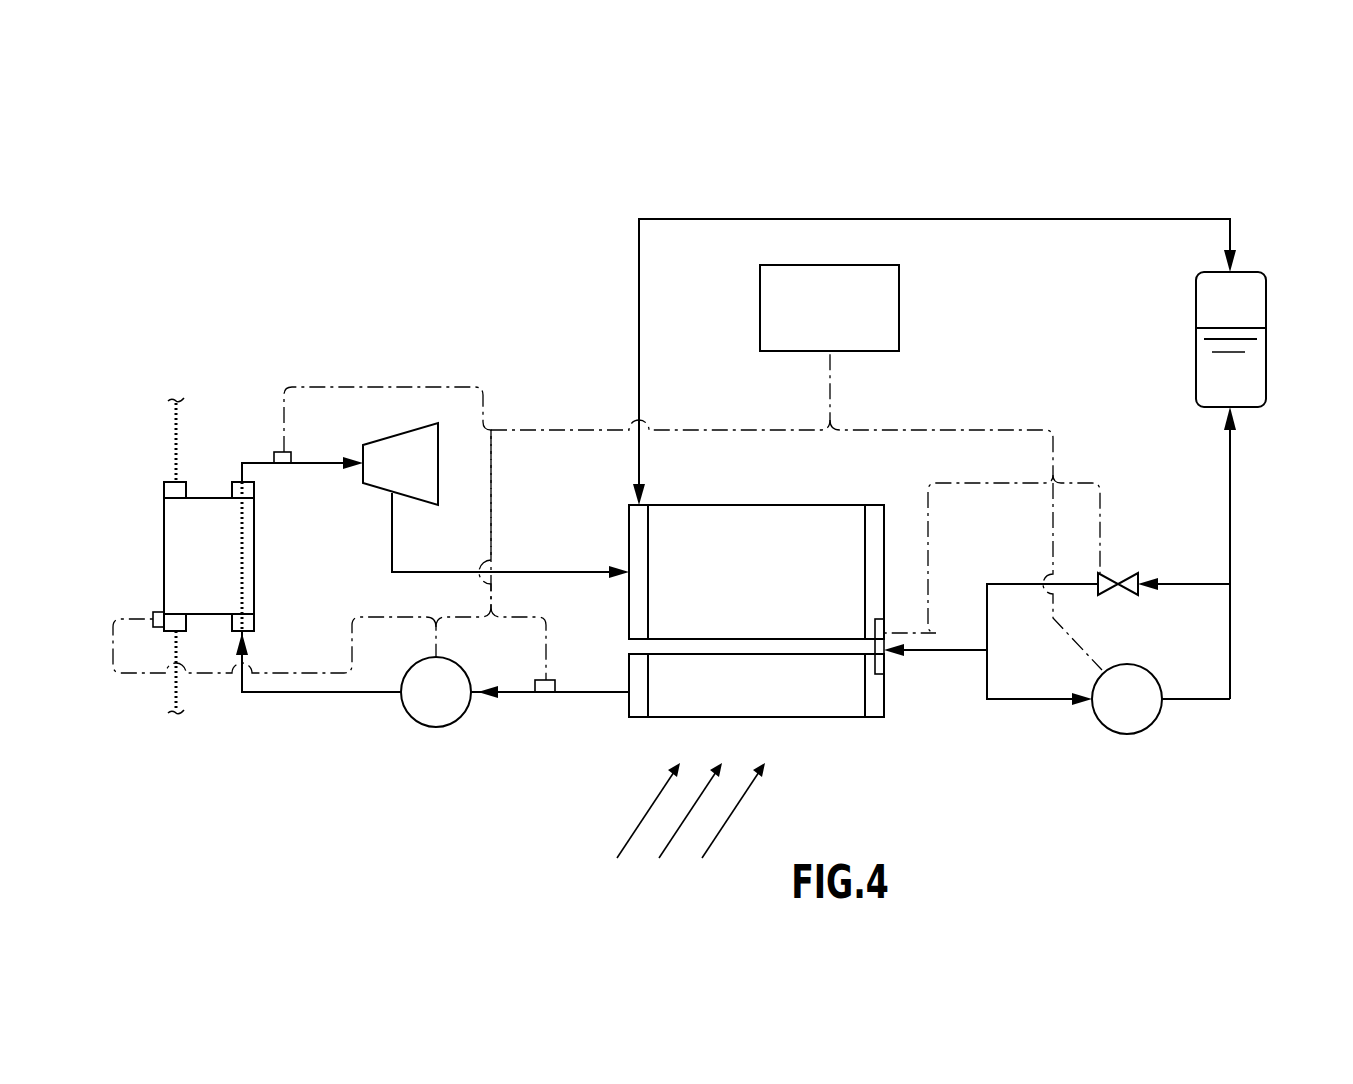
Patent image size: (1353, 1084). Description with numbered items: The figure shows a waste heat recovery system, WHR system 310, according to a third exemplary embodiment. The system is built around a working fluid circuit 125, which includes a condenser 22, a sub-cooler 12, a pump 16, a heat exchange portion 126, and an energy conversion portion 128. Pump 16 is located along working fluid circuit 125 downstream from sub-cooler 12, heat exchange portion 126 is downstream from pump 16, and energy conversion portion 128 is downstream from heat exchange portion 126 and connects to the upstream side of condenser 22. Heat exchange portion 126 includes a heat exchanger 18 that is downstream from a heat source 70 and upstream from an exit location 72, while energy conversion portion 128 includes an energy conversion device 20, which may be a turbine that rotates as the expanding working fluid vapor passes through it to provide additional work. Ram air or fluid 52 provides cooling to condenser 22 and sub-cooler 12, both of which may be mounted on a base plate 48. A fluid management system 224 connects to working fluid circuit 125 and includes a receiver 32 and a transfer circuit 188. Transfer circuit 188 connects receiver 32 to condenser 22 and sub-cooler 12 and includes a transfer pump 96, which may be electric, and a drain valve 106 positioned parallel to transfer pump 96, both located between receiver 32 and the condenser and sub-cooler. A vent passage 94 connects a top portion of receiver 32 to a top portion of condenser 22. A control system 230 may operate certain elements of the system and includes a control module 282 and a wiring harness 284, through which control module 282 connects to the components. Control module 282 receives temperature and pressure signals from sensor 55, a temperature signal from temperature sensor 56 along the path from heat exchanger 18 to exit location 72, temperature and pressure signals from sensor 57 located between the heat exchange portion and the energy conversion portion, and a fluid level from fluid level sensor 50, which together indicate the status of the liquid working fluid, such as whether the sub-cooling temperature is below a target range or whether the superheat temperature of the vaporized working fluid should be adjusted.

The sub-cooler 12 is at (668, 717).
The pump 16 is at (415, 717).
The heat exchanger 18 is at (164, 546).
The energy conversion device 20 is at (368, 487).
The condenser 22 is at (752, 505).
The receiver 32 is at (1266, 290).
The base plate 48 is at (884, 717).
The fluid level sensor 50 is at (884, 666).
The ram air or fluid 52 is at (608, 813).
The sensor 55 is at (555, 680).
The temperature sensor 56 is at (153, 618).
The temperature and pressure sensor 57 is at (280, 452).
The heat source 70 is at (177, 400).
The exit location 72 is at (177, 713).
The vent passage 94 is at (1015, 218).
The transfer pump 96 is at (1143, 733).
The drain valve 106 is at (1122, 573).
The working fluid circuit 125 is at (415, 316).
The heat exchange portion 126 is at (138, 388).
The energy conversion portion 128 is at (383, 414).
The transfer circuit 188 is at (1246, 728).
The fluid management system 224 is at (1036, 750).
The control system 230 is at (935, 296).
The control module 282 is at (812, 321).
The wiring harness 284 is at (722, 430).
The WHR system 310 is at (1175, 194).